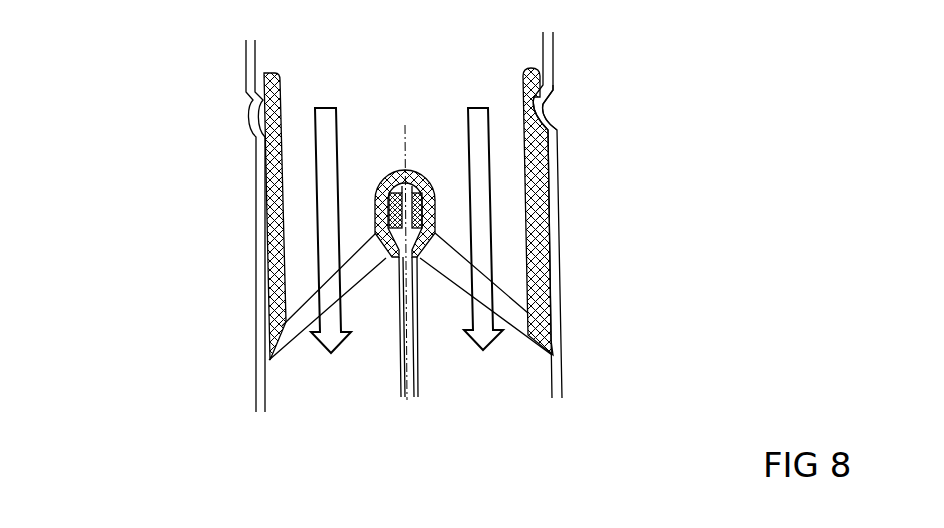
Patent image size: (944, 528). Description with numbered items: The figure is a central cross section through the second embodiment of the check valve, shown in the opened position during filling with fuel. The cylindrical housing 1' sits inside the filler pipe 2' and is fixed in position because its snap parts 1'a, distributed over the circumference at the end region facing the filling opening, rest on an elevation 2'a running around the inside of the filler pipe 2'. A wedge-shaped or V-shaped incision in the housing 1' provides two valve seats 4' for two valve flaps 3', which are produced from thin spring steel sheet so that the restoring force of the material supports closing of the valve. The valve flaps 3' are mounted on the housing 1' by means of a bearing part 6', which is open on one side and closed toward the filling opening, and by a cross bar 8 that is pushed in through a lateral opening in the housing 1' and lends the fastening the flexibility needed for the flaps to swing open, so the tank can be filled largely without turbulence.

The housing 1' is at (637, 211).
The snap part 1'a is at (655, 142).
The filler pipe 2' is at (636, 215).
The elevation 2'a is at (655, 190).
The valve flap 3' is at (236, 325).
The valve seat 4' is at (171, 221).
The bearing part 6' is at (243, 178).
The cross bar 8 is at (393, 212).